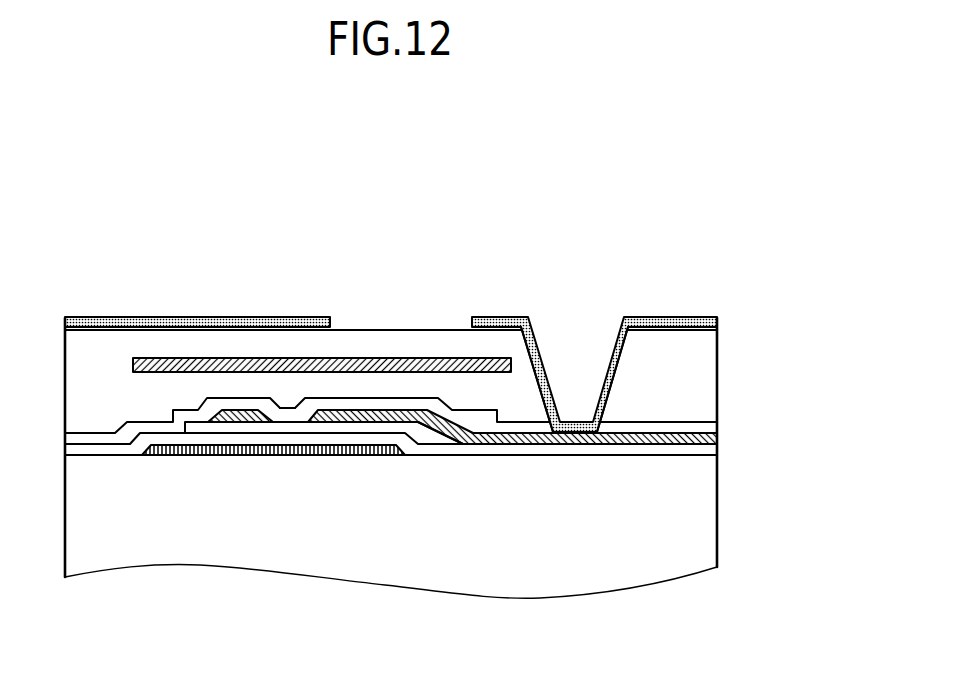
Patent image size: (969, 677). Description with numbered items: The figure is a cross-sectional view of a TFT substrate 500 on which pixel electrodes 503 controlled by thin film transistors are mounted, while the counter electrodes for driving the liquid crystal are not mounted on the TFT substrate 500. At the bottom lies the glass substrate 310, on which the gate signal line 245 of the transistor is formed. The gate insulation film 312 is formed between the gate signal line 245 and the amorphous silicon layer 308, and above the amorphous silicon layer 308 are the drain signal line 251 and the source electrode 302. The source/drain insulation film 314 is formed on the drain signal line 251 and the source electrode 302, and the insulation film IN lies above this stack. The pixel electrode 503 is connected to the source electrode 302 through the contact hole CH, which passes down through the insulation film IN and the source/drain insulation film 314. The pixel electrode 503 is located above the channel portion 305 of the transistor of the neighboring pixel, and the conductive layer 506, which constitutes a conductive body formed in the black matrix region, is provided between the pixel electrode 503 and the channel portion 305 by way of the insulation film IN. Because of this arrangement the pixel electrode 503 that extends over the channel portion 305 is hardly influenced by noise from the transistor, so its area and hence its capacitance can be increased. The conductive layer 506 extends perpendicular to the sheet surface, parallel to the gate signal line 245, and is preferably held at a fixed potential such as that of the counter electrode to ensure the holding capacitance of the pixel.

The TFT substrate 500 is at (405, 173).
The pixel electrode 503 is at (133, 322).
The contact hole CH is at (577, 338).
The insulation film IN is at (695, 373).
The source/drain insulation film 314 is at (707, 428).
The gate insulation film 312 is at (707, 452).
The glass substrate 310 is at (707, 490).
The gate signal line 245 is at (372, 450).
The amorphous silicon layer 308 is at (215, 425).
The drain signal line 251 is at (252, 423).
The source electrode 302 is at (343, 423).
The channel portion 305 is at (290, 397).
The conductive layer 506 is at (133, 363).